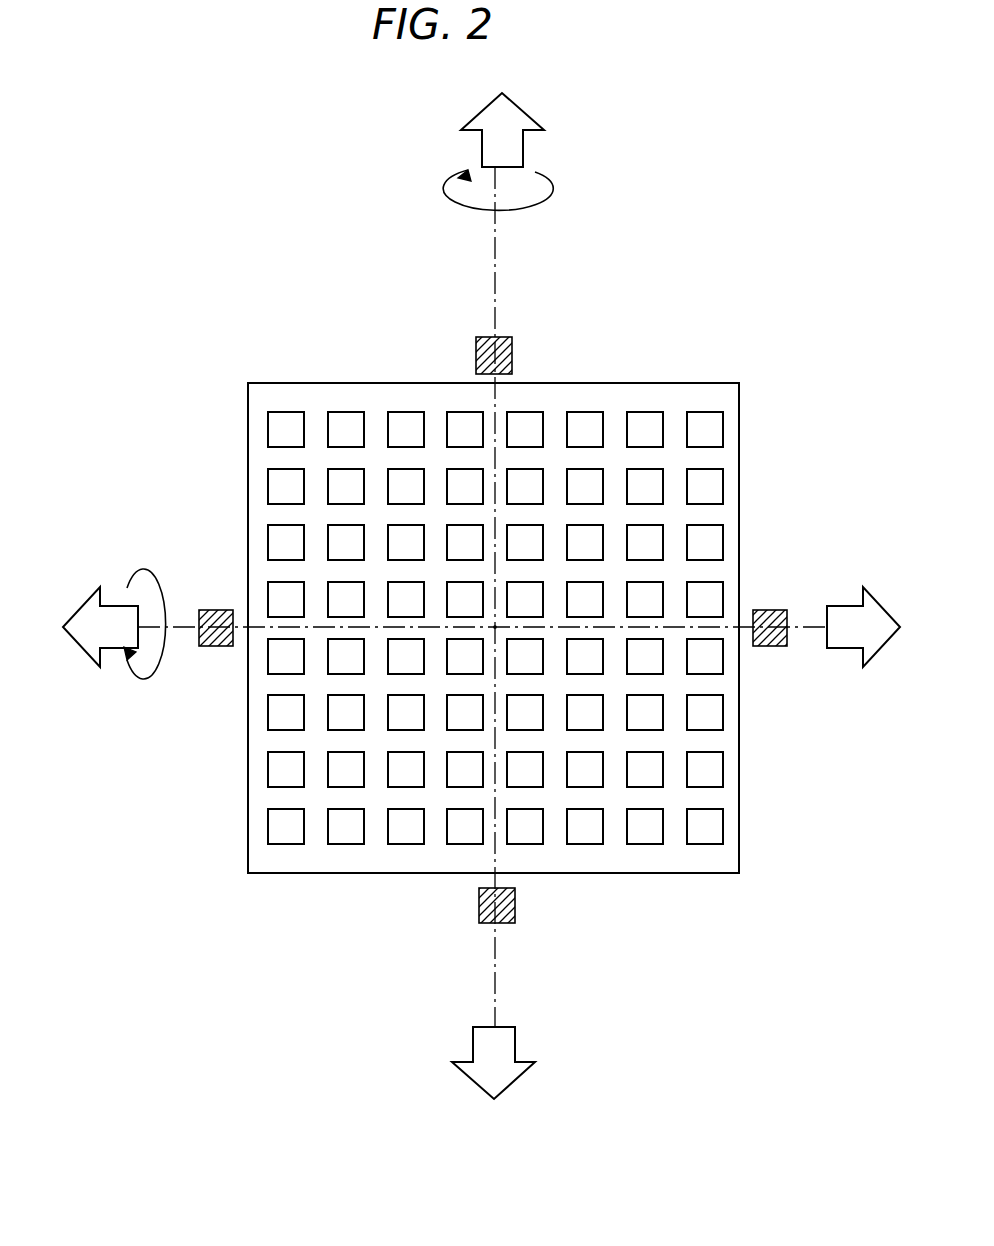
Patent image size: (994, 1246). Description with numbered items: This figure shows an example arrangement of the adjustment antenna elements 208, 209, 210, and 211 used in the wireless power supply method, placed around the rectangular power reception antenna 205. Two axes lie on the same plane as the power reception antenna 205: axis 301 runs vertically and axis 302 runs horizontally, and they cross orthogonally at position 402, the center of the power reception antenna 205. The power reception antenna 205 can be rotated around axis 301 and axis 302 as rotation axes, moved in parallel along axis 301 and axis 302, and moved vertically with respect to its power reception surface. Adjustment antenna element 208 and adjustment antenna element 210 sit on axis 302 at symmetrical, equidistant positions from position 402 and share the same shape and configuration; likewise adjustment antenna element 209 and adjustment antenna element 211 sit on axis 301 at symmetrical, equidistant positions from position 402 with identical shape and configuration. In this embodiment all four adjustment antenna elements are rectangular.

The power reception antenna 205 is at (259, 403).
The adjustment antenna element 208 is at (221, 646).
The adjustment antenna element 209 is at (512, 343).
The adjustment antenna element 210 is at (783, 617).
The adjustment antenna element 211 is at (480, 918).
The axis 301 is at (495, 268).
The axis 302 is at (187, 625).
The position of the center of power reception antenna 402 is at (497, 629).